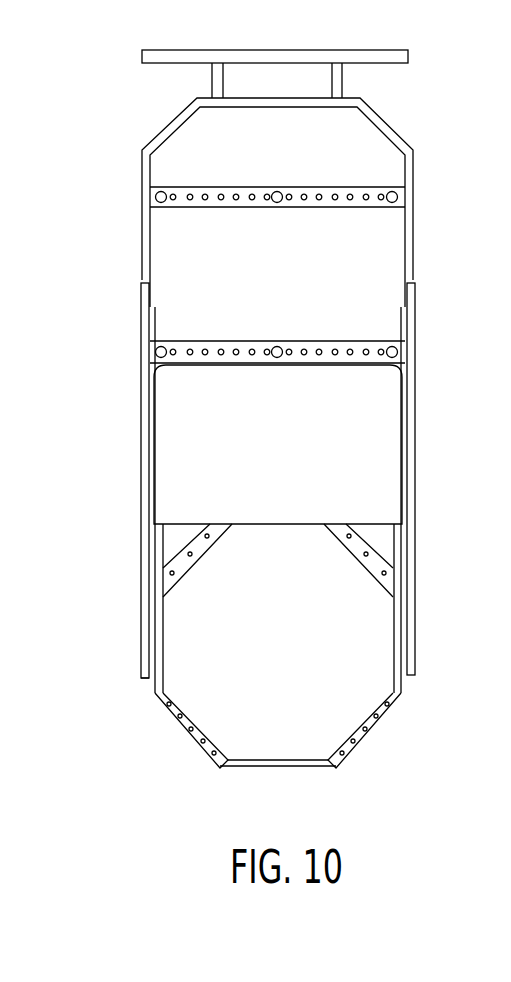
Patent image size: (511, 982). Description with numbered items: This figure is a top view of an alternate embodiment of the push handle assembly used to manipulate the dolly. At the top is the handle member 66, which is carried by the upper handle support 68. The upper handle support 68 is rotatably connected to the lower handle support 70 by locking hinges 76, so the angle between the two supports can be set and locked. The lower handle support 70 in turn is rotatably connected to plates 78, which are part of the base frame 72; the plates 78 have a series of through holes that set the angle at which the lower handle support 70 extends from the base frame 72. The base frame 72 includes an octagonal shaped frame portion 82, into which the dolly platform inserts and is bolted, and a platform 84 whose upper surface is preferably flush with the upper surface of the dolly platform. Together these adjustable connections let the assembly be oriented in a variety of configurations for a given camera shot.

The handle member 66 is at (141, 57).
The upper handle support 68 is at (414, 212).
The lower handle support 70 is at (414, 487).
The base frame 72 is at (140, 693).
The locking hinges 76 is at (412, 290).
The plates 78 is at (403, 682).
The octagonal shaped frame portion 82 is at (283, 768).
The platform 84 is at (286, 476).